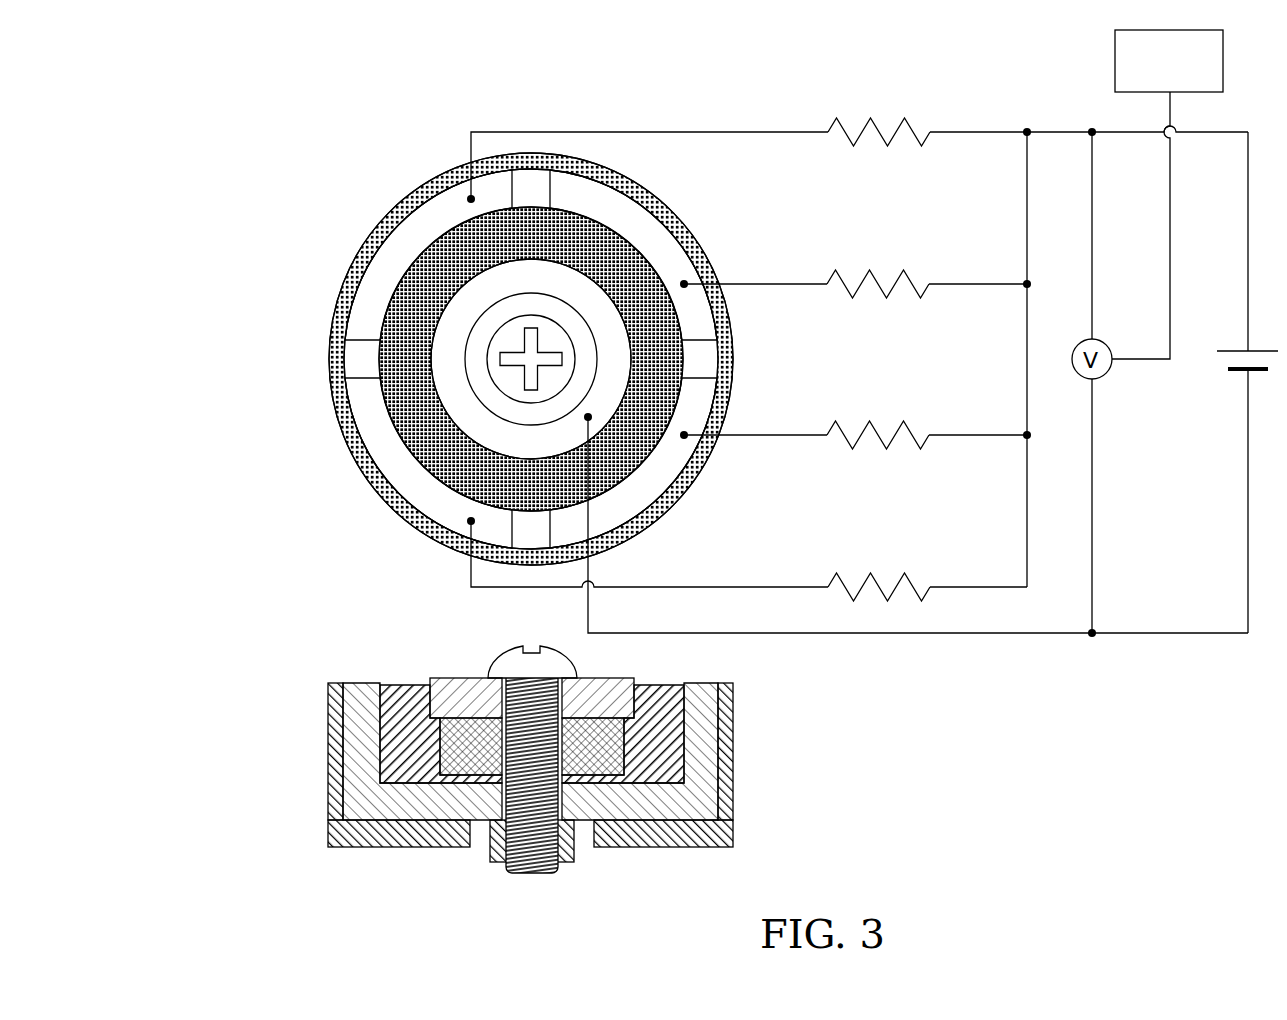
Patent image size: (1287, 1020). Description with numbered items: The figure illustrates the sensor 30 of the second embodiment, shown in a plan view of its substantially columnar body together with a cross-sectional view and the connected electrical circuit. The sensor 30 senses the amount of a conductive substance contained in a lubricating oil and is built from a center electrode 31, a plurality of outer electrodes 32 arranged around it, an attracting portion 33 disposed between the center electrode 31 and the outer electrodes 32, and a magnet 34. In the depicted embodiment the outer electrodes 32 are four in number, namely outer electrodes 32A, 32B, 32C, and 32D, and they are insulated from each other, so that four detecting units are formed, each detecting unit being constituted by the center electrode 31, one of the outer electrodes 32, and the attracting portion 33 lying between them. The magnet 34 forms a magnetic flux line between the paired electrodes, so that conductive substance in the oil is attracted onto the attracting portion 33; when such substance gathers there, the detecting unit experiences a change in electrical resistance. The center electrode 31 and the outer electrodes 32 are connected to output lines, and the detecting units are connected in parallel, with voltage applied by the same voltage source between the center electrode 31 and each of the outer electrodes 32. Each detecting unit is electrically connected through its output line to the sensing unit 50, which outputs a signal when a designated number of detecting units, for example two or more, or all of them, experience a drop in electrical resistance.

The sensor 30 is at (471, 479).
The center electrode 31 is at (455, 404).
The outer electrodes 32 is at (511, 500).
The outer electrode 32A is at (396, 252).
The outer electrode 32B is at (642, 227).
The outer electrode 32C is at (645, 492).
The outer electrode 32D is at (423, 493).
The attracting portion 33 is at (396, 362).
The magnet 34 is at (595, 760).
The sensing unit 50 is at (1169, 61).